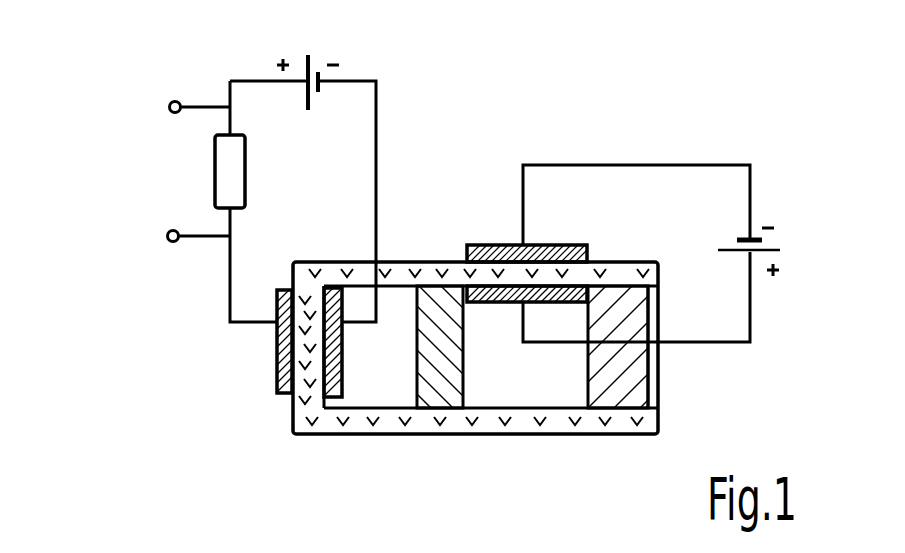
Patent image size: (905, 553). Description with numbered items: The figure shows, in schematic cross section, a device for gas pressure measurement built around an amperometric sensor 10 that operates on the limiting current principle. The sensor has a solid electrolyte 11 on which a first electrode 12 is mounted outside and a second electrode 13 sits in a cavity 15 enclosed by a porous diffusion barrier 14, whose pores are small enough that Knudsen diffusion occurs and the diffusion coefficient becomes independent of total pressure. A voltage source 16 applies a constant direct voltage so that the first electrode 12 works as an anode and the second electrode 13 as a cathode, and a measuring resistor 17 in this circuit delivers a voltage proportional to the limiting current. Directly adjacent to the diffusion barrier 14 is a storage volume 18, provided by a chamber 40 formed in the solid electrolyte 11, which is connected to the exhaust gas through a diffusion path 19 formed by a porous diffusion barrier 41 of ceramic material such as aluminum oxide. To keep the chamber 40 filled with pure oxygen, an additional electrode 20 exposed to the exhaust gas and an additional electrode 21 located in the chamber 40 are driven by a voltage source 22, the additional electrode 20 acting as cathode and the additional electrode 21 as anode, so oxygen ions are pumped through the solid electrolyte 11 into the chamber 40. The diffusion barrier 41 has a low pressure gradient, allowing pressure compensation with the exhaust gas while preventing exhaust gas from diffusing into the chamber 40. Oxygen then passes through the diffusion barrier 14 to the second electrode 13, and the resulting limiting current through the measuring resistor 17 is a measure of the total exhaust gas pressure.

The amperometric sensor 10 is at (379, 393).
The solid electrolyte 11 is at (295, 423).
The first electrode 12 is at (272, 353).
The second electrode 13 is at (333, 392).
The diffusion barrier 14 is at (447, 262).
The cavity 15 is at (360, 368).
The voltage source 16 is at (317, 70).
The measuring resistor 17 is at (215, 168).
The storage volume 18 is at (544, 392).
The diffusion path 19 is at (660, 375).
The additional electrode 20 is at (550, 247).
The additional electrode 21 is at (501, 302).
The voltage source 22 is at (772, 247).
The chamber 40 is at (490, 392).
The porous diffusion barrier 41 is at (607, 383).